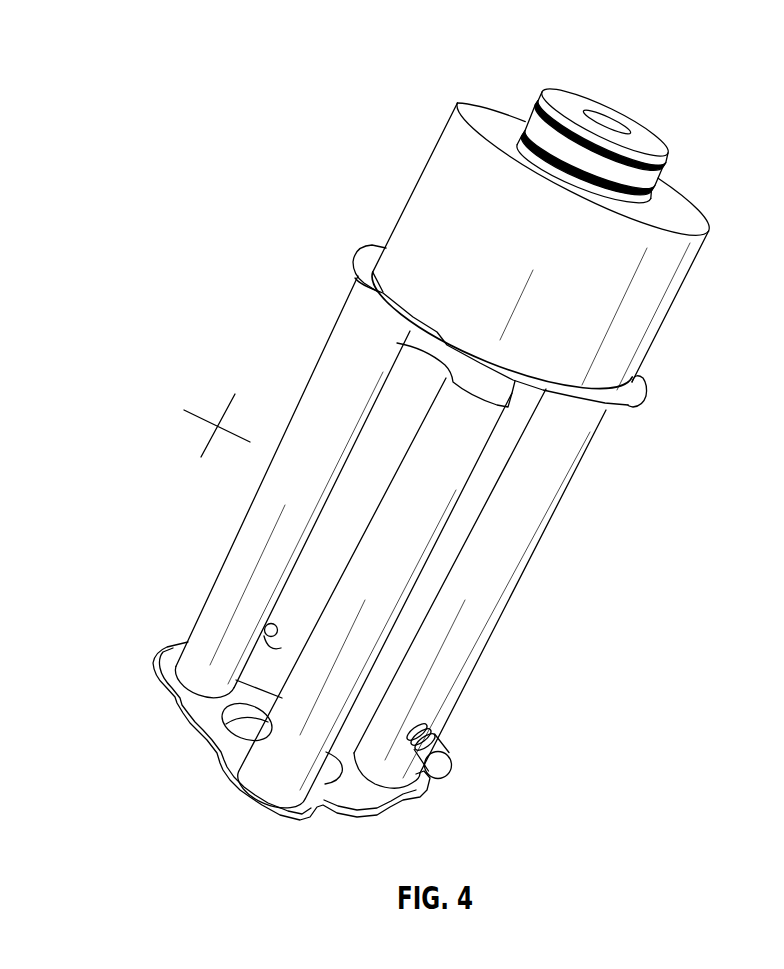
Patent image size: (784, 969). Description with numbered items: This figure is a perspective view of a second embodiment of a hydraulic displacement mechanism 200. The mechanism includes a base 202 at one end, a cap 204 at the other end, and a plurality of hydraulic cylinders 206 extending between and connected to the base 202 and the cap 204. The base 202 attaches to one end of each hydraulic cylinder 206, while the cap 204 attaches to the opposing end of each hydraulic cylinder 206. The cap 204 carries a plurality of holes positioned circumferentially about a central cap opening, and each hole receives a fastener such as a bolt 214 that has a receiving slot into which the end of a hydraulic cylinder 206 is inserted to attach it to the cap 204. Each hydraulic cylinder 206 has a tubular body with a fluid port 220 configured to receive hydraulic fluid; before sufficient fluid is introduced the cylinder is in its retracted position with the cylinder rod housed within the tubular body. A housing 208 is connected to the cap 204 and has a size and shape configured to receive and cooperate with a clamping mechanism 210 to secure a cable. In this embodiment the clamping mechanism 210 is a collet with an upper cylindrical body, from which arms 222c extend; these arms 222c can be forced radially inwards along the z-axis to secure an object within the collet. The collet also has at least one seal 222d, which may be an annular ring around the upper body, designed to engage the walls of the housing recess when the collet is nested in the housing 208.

The hydraulic displacement mechanism 200 is at (419, 52).
The base 202 is at (185, 729).
The cap 204 is at (636, 404).
The hydraulic cylinders 206 is at (328, 350).
The housing 208 is at (665, 314).
The clamping mechanism 210 is at (640, 130).
The bolt 214 is at (404, 344).
The fluid port 220 is at (440, 766).
The arms 222c is at (672, 165).
The seal 222d is at (660, 188).